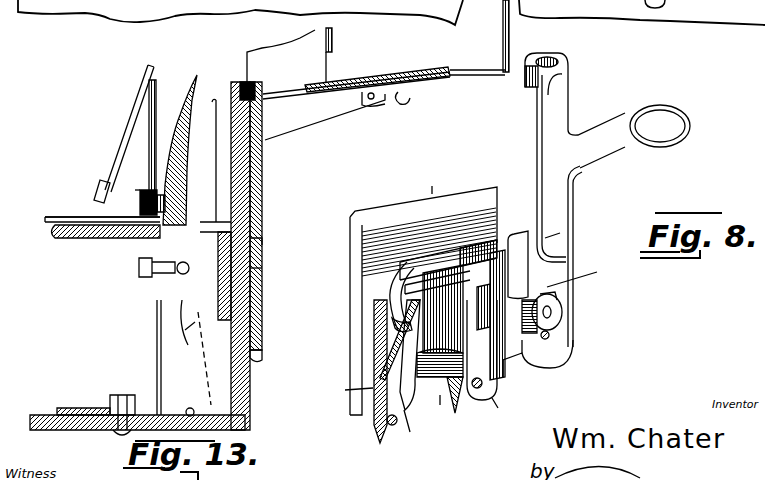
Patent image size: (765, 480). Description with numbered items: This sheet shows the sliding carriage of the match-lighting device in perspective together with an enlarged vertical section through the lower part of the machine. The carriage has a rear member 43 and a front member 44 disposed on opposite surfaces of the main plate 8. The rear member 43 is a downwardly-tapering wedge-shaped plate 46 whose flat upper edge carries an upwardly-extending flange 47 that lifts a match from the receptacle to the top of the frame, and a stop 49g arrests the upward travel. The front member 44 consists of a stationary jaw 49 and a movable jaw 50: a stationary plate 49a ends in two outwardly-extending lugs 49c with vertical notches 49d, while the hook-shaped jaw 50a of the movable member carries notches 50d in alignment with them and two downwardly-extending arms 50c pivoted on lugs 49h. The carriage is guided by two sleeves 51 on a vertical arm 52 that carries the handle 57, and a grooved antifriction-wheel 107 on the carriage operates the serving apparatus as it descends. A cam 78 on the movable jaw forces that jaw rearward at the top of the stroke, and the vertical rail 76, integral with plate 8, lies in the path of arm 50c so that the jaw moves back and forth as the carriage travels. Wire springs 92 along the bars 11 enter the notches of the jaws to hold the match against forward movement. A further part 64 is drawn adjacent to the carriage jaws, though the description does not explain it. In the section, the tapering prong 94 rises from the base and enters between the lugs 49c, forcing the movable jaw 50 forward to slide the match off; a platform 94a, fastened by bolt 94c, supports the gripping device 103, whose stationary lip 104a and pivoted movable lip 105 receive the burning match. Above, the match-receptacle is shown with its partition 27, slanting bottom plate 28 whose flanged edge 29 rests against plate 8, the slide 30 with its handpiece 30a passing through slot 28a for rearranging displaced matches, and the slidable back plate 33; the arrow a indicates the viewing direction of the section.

In FIG. 13, the plate 8 is at (233, 284).
In FIG. 13, the bars 11 is at (129, 129).
In FIG. 13, the partition 27 is at (334, 35).
In FIG. 13, the bottom plate 28 is at (300, 88).
In FIG. 13, the slot 28a is at (486, 78).
In FIG. 13, the flanged edge 29 is at (272, 120).
In FIG. 13, the slide 30 is at (374, 73).
In FIG. 13, the handpiece 30a is at (427, 106).
In FIG. 13, the back plate 33 is at (503, 15).
In FIG. 8, the rear member 43 is at (423, 296).
In FIG. 8, the front member 44 is at (511, 329).
In FIG. 13, the wedge-shaped plate 46 is at (262, 203).
In FIG. 8, the wedge-shaped plate 46 is at (366, 320).
In FIG. 13, the flange 47 is at (262, 95).
In FIG. 8, the flange 47 is at (439, 175).
In FIG. 8, the stationary jaw 49 is at (482, 350).
In FIG. 13, the stationary plate 49a is at (262, 269).
In FIG. 8, the stationary plate 49a is at (445, 406).
In FIG. 13, the lugs 49c is at (260, 240).
In FIG. 8, the lugs 49c is at (400, 316).
In FIG. 8, the vertical notches 49d is at (598, 200).
In FIG. 8, the stop 49g is at (562, 232).
In FIG. 13, the lugs 49h is at (185, 381).
In FIG. 8, the lugs 49h is at (468, 426).
In FIG. 8, the movable jaw 50 is at (443, 286).
In FIG. 13, the hook-shaped jaw 50a is at (104, 190).
In FIG. 8, the hook-shaped jaw 50a is at (498, 248).
In FIG. 13, the arms 50c is at (185, 331).
In FIG. 8, the arms 50c is at (469, 334).
In FIG. 8, the vertical notches 50d is at (497, 238).
In FIG. 8, the sleeves 51 is at (557, 57).
In FIG. 8, the vertical arm 52 is at (538, 165).
In FIG. 8, the handle 57 is at (660, 126).
In FIG. 13, the pawl 64 is at (258, 376).
In FIG. 8, the pawl 64 is at (378, 425).
In FIG. 13, the vertical rail 76 is at (262, 175).
In FIG. 8, the cam 78 is at (543, 342).
In FIG. 13, the wire springs 92 is at (159, 88).
In FIG. 13, the prong 94 is at (231, 180).
In FIG. 13, the platform 94a is at (108, 240).
In FIG. 13, the bolt 94c is at (143, 268).
In FIG. 13, the gripping device 103 is at (48, 224).
In FIG. 13, the lip 104a is at (168, 203).
In FIG. 13, the movable lip 105 is at (137, 190).
In FIG. 8, the antifriction-wheel 107 is at (562, 316).
In FIG. 13, the arrow a is at (247, 94).